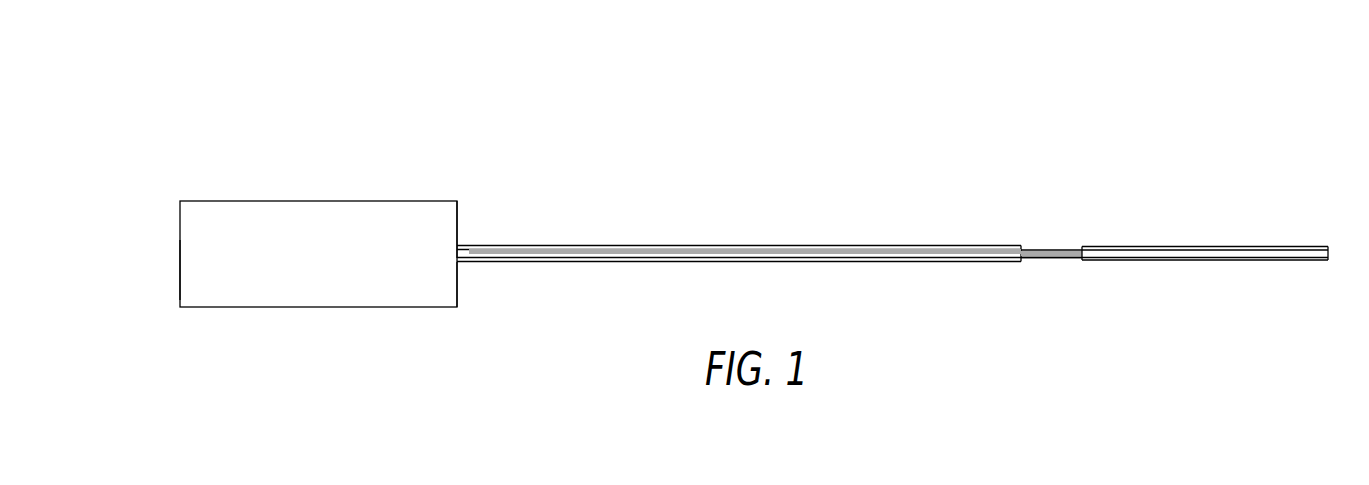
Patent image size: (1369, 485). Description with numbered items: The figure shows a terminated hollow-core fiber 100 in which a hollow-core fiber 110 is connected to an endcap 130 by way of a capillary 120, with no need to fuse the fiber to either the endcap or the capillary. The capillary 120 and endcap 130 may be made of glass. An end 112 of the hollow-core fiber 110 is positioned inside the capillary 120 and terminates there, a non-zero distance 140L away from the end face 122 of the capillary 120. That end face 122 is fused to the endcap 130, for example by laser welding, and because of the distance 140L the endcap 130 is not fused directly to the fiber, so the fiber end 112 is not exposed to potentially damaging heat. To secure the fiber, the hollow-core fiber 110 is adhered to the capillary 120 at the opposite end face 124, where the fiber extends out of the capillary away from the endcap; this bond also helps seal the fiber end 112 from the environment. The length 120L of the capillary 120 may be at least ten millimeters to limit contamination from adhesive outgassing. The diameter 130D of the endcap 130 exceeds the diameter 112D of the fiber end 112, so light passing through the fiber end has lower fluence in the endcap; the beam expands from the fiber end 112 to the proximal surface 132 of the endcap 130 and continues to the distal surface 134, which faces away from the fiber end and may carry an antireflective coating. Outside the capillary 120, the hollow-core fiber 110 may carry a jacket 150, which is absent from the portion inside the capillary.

The terminated hollow-core fiber 100 is at (203, 98).
The hollow-core fiber 110 is at (1049, 249).
The fiber end 112 is at (472, 251).
The diameter of fiber end 112D is at (562, 286).
The capillary 120 is at (618, 245).
The length of capillary 120L is at (1021, 233).
The end face of capillary 122 is at (456, 258).
The end face of capillary 124 is at (1026, 259).
The endcap 130 is at (335, 265).
The diameter of endcap 130D is at (243, 305).
The proximal surface of endcap 132 is at (460, 278).
The distal surface of endcap 134 is at (179, 282).
The non-zero distance 140L is at (505, 183).
The jacket 150 is at (1183, 246).